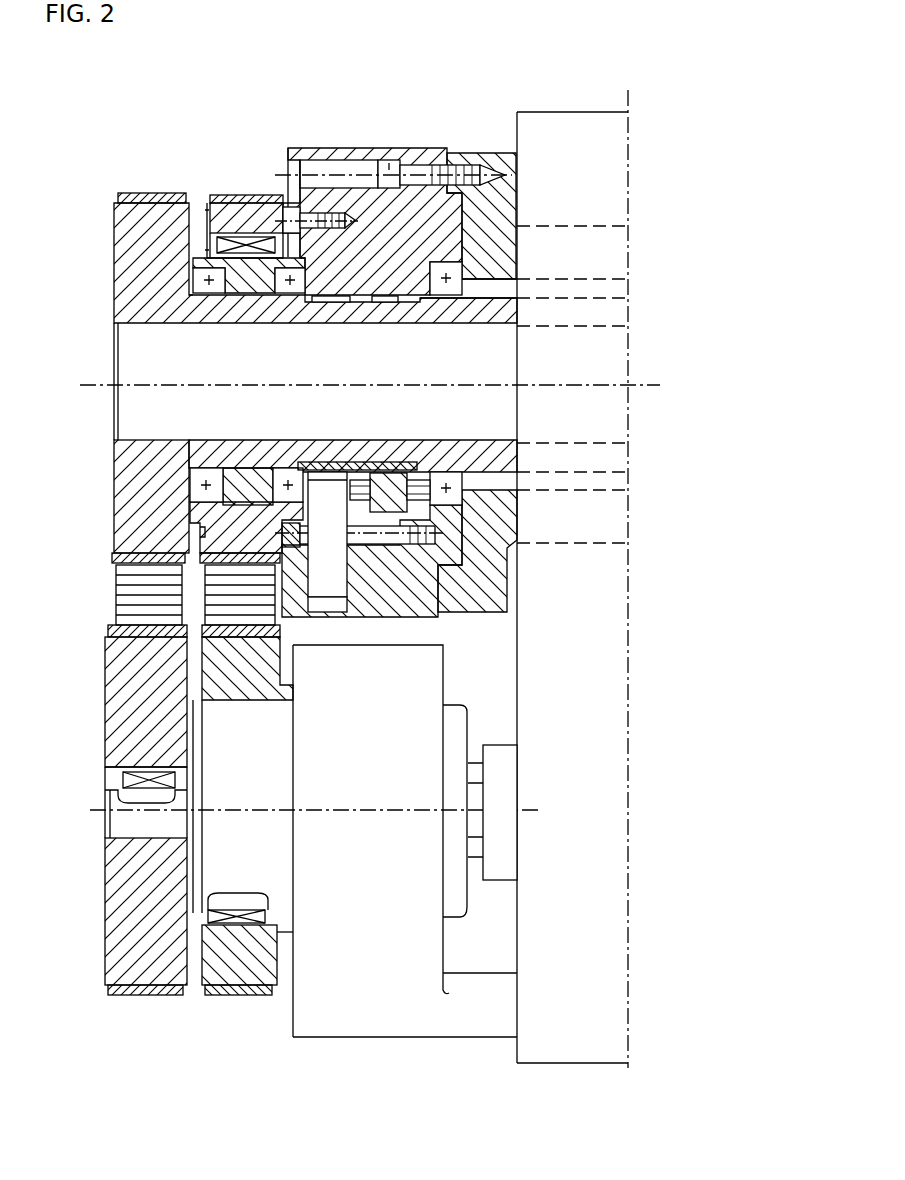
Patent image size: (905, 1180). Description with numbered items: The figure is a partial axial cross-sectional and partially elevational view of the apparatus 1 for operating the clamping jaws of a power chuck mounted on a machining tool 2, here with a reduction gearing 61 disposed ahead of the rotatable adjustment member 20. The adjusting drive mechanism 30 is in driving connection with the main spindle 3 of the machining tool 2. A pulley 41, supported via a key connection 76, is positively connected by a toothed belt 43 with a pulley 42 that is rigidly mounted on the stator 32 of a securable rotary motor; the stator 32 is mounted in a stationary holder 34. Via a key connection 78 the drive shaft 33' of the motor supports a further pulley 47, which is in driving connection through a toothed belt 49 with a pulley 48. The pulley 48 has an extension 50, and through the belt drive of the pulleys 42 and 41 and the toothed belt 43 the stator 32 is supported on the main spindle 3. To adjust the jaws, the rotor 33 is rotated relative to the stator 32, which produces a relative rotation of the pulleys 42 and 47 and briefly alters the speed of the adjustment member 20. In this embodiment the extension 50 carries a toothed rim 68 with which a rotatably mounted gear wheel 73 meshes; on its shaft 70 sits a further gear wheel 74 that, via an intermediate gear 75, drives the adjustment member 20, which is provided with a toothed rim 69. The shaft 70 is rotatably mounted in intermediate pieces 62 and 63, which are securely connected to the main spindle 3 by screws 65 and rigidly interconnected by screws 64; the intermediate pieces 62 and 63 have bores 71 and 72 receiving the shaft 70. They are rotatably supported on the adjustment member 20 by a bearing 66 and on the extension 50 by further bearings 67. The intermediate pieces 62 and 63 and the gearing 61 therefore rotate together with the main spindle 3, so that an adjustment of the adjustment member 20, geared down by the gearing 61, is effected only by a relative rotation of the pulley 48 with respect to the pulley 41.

The apparatus 1 is at (105, 1026).
The machining tool 2 is at (505, 112).
The main spindle 3 is at (487, 217).
The adjustment member 20 is at (485, 312).
The adjusting drive mechanism 30 is at (397, 1066).
The stator 32 is at (217, 730).
The rotor 33 is at (116, 806).
The drive shaft 33' is at (107, 802).
The stationary holder 34 is at (339, 1049).
The pulley 41 is at (222, 193).
The pulley 42 is at (225, 1000).
The toothed belt 43 is at (240, 597).
The pulley 47 is at (125, 925).
The pulley 48 is at (125, 247).
The toothed belt 49 is at (115, 583).
The extension 50 is at (252, 318).
The reduction gearing 61 is at (297, 584).
The intermediate piece 62 is at (383, 222).
The intermediate piece 63 is at (290, 148).
The screws 64 is at (258, 192).
The screws 65 is at (385, 148).
The bearing 66 is at (455, 292).
The bearings 67 is at (202, 318).
The toothed rim 68 is at (323, 305).
The toothed rim 69 is at (395, 310).
The shaft 70 is at (332, 445).
The bore 71 is at (235, 475).
The bore 72 is at (448, 470).
The gear wheel 73 is at (300, 462).
The gear wheel 74 is at (400, 560).
The intermediate gear 75 is at (395, 472).
The key connection 76 is at (210, 200).
The key connection 78 is at (122, 772).